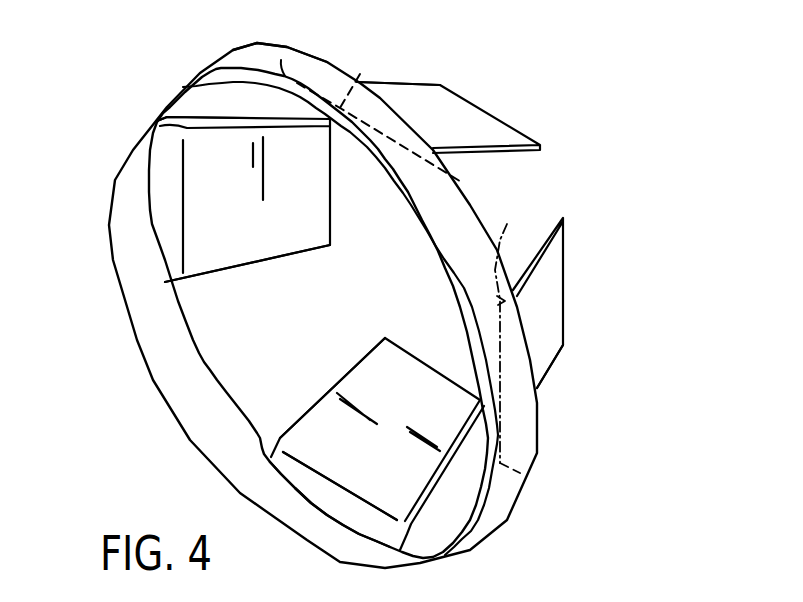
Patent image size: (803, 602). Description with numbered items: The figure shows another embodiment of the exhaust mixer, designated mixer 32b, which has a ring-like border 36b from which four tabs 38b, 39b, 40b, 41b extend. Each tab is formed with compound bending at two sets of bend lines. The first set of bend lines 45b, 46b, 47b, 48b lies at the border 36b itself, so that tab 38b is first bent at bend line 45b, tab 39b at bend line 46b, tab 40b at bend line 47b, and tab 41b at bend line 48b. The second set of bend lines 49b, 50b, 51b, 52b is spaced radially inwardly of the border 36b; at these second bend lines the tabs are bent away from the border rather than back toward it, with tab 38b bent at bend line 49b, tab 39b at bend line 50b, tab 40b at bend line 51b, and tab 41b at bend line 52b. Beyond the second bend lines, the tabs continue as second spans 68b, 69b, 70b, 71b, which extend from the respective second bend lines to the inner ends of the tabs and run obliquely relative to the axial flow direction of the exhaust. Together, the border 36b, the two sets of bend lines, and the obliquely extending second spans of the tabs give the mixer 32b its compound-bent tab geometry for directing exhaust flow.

The mixer 32b is at (228, 53).
The border 36b is at (262, 58).
The first bend line 45b is at (360, 74).
The second span 68b is at (433, 97).
The tab 38b is at (473, 122).
The second bend line 52b is at (180, 170).
The first bend line 48b is at (150, 213).
The tab 41b is at (241, 213).
The second span 71b is at (217, 260).
The second bend line 49b is at (463, 183).
The second bend line 50b is at (515, 329).
The tab 39b is at (557, 300).
The second span 69b is at (549, 340).
The first bend line 46b is at (500, 392).
The second span 70b is at (322, 427).
The tab 40b is at (428, 400).
The second bend line 51b is at (330, 476).
The first bend line 47b is at (327, 515).